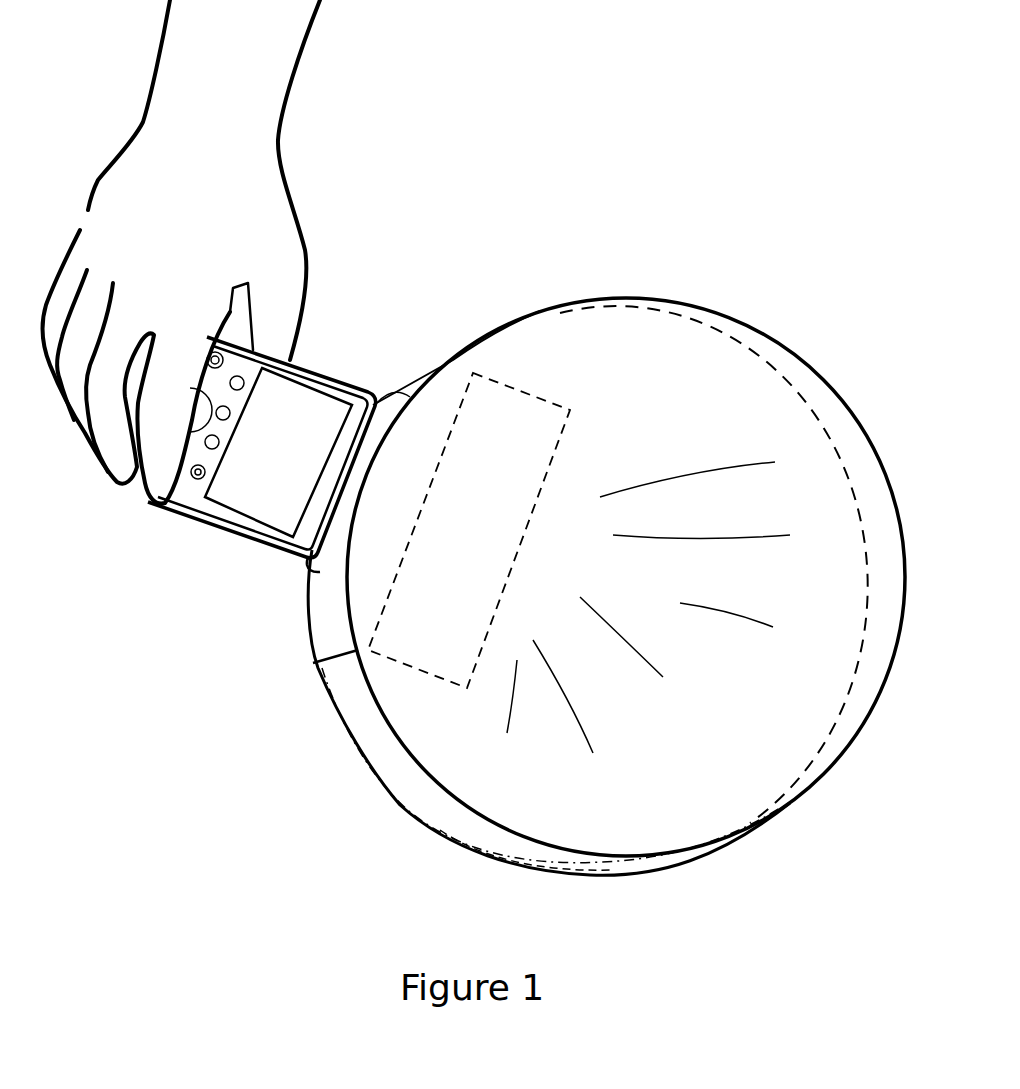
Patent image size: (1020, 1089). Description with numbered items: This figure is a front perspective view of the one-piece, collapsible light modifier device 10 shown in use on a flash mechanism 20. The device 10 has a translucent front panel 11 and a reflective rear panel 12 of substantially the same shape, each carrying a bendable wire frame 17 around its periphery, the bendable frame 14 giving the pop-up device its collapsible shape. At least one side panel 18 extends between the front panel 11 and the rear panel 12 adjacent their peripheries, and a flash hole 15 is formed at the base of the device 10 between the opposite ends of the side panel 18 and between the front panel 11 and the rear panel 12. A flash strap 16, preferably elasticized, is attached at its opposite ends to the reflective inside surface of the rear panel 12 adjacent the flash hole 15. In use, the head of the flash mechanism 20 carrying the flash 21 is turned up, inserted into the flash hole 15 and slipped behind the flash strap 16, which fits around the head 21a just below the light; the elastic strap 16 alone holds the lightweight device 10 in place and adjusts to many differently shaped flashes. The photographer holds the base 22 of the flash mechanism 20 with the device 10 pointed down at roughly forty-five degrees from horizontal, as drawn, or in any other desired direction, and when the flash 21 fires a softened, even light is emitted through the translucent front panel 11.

The light modifier device 10 is at (527, 117).
The translucent front panel 11 is at (805, 357).
The rear panel 12 is at (706, 332).
The bendable frame 14 is at (338, 762).
The flash hole 15 is at (412, 380).
The flash strap 16 is at (532, 393).
The bendable wire frame 17 is at (443, 817).
The side panel 18 is at (405, 777).
The flash mechanism 20 is at (210, 547).
The flash 21 is at (562, 490).
The head 21a is at (340, 570).
The flash mechanism base 22 is at (192, 487).